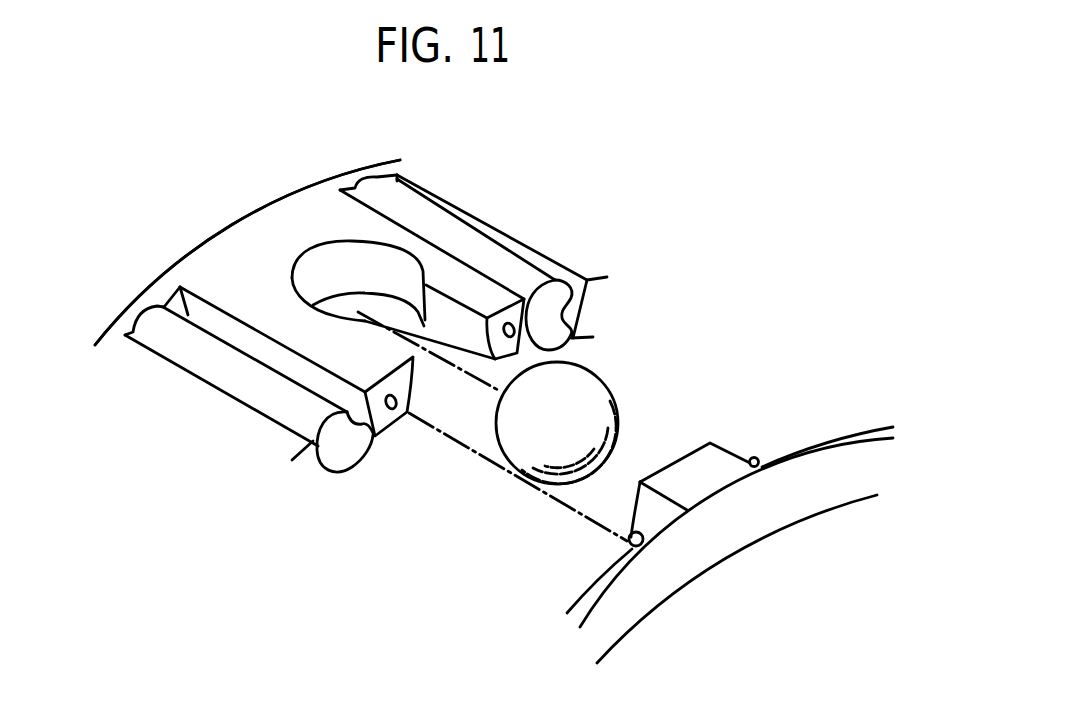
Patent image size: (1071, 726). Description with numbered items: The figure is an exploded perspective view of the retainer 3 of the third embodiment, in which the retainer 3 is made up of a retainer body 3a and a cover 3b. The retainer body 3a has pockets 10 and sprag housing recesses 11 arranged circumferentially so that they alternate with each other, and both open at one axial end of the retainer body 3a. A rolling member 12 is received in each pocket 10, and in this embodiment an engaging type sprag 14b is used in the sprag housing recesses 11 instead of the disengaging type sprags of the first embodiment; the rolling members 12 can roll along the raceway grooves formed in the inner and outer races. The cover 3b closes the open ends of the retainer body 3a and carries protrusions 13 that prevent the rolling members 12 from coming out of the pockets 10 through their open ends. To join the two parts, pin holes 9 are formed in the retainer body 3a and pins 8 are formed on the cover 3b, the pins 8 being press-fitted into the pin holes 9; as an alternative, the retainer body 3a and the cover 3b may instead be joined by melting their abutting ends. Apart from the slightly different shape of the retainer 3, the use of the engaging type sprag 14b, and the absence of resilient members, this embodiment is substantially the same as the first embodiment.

The retainer 3 is at (157, 287).
The retainer body 3a is at (253, 233).
The cover 3b is at (840, 490).
The pin 8 is at (627, 550).
The pin hole 9 is at (393, 410).
The pocket 10 is at (340, 248).
The sprag housing recess 11 is at (500, 237).
The rolling member 12 is at (587, 387).
The protrusion 13 is at (693, 457).
The engaging type sprag 14b is at (524, 263).